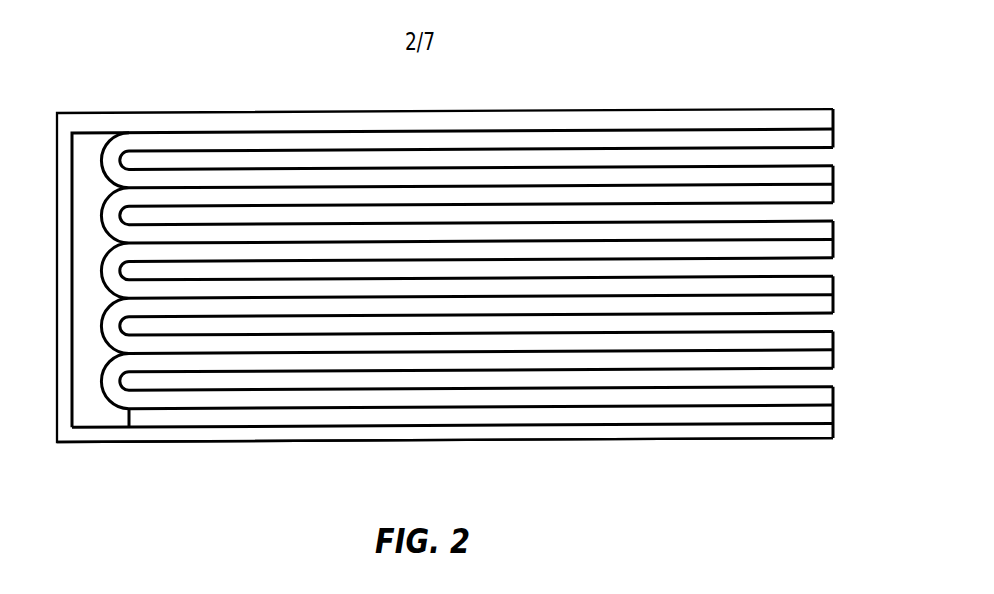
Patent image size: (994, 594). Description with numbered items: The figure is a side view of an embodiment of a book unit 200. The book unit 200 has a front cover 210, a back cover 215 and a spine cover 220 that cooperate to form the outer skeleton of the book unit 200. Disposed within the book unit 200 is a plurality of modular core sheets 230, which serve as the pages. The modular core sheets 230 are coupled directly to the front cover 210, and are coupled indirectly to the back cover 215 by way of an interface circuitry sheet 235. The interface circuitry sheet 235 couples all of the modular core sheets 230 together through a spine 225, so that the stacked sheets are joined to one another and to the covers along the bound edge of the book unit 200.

The book unit 200 is at (627, 82).
The front cover 210 is at (272, 121).
The back cover 215 is at (345, 434).
The spine cover 220 is at (68, 150).
The spine 225 is at (100, 413).
The modular core sheets 230 is at (687, 248).
The interface circuitry sheet 235 is at (550, 417).